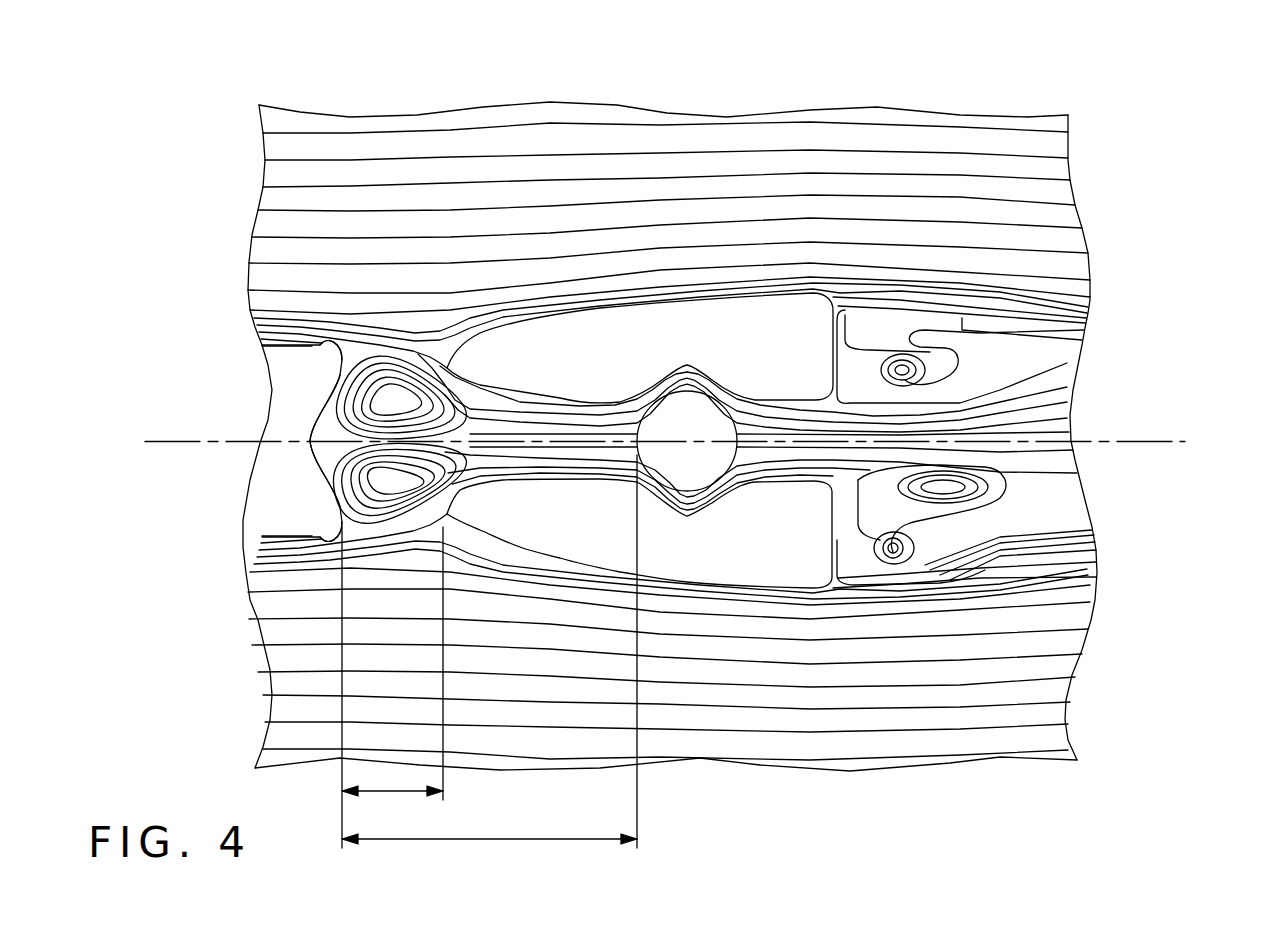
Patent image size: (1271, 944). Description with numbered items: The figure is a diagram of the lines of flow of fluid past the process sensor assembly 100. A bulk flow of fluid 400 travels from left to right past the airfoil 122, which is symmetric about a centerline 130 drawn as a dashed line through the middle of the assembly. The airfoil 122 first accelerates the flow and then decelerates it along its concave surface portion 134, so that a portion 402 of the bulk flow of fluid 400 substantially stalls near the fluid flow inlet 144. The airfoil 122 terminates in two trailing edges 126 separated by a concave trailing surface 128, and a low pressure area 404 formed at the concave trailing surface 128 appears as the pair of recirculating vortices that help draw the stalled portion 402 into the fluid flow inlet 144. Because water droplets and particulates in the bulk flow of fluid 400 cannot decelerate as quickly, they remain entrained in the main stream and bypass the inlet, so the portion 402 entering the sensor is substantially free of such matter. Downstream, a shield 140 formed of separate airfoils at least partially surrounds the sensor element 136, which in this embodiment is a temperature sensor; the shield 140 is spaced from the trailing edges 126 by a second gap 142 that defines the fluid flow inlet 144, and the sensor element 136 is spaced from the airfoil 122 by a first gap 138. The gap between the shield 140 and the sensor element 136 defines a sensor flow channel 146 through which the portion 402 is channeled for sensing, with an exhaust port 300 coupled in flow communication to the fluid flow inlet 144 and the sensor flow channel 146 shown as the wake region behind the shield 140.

The process sensor assembly 100 is at (833, 80).
The bulk flow of fluid 400 is at (414, 203).
The portion of bulk flow of fluid 402 is at (403, 344).
The low pressure area 404 is at (384, 427).
The fluid flow inlet 144 is at (413, 353).
The concave surface portion 134 is at (292, 352).
The trailing edge 126 is at (318, 347).
The airfoil 122 is at (270, 497).
The concave trailing surface 128 is at (310, 453).
The shield 140 is at (570, 367).
The sensor element 136 is at (710, 472).
The sensor flow channel 146 is at (688, 375).
The exhaust port 300 is at (820, 476).
The centerline 130 is at (1128, 441).
The second gap 142 is at (393, 792).
The first gap 138 is at (478, 838).